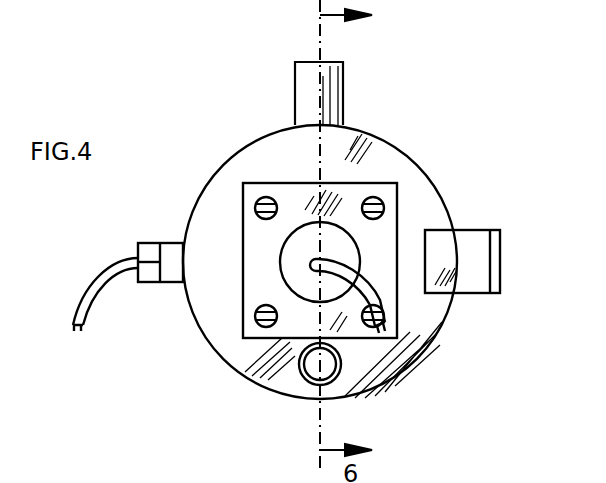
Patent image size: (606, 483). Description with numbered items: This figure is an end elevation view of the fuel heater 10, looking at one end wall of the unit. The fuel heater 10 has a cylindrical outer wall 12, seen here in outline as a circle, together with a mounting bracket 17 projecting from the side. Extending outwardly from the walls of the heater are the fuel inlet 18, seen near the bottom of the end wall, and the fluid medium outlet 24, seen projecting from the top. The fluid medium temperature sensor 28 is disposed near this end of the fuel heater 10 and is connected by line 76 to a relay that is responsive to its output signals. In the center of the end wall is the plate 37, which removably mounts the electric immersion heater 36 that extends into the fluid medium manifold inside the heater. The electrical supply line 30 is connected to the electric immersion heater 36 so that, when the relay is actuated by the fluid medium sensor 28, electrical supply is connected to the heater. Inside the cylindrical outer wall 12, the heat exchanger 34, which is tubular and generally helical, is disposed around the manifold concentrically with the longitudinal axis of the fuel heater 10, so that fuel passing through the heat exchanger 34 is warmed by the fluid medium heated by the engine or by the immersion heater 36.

The fuel heater 10 is at (233, 128).
The cylindrical outer wall 12 is at (358, 128).
The mounting bracket 17 is at (470, 293).
The fuel inlet 18 is at (299, 385).
The fluid medium outlet 24 is at (295, 99).
The fluid medium temperature sensor 28 is at (152, 283).
The electrical supply line 30 is at (396, 296).
The heat exchanger 34 is at (20, 482).
The electric immersion heater 36 is at (357, 240).
The plate 37 is at (243, 225).
The line 76 is at (98, 272).